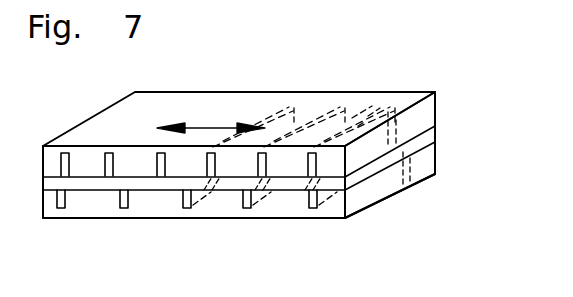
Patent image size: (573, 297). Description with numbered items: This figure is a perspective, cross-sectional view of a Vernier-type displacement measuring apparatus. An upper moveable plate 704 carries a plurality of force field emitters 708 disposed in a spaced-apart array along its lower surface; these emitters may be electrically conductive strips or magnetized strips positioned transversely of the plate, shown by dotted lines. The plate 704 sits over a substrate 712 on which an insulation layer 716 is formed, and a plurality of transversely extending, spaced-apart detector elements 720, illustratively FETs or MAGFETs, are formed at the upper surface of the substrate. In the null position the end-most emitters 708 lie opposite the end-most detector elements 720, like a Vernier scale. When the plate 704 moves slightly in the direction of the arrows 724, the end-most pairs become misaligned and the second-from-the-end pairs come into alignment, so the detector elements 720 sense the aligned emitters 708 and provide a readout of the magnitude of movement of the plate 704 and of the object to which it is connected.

The upper moveable plate 704 is at (420, 118).
The force field emitters 708 is at (109, 153).
The substrate 712 is at (367, 195).
The insulation layer 716 is at (408, 148).
The force field detector elements 720 is at (124, 208).
The arrows 724 is at (215, 128).